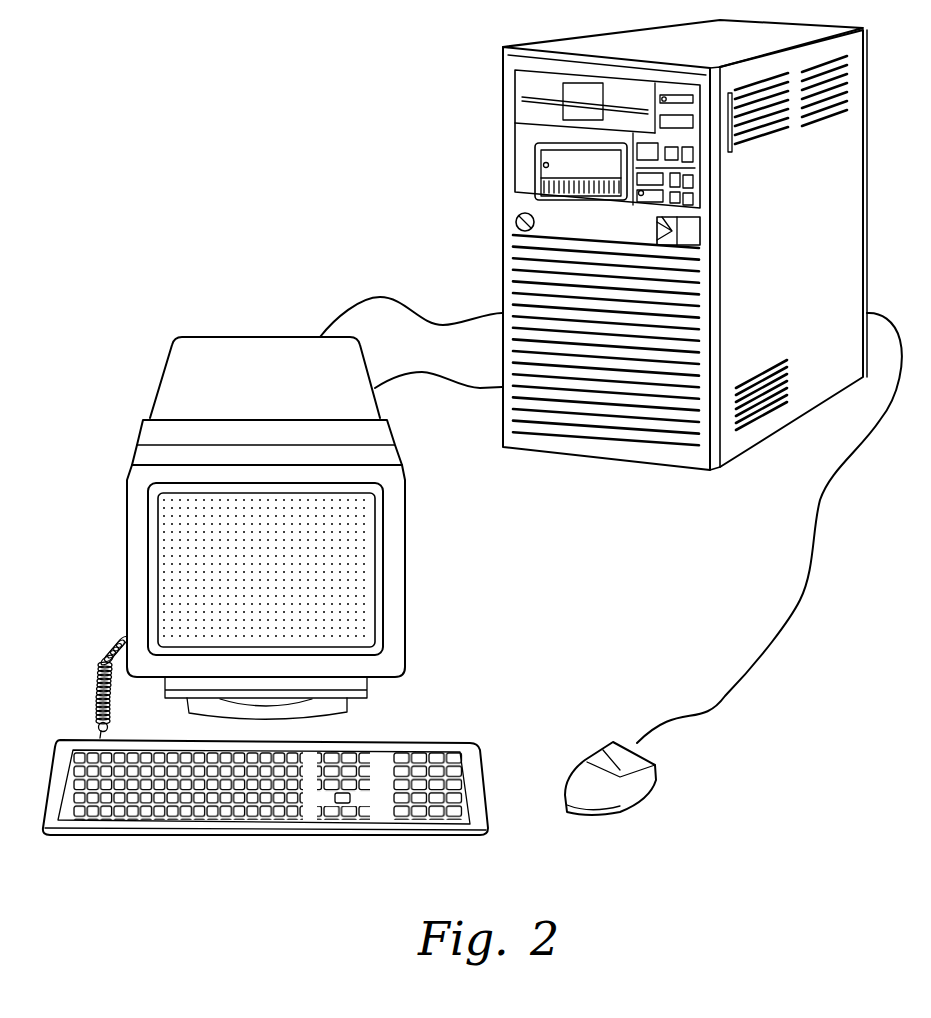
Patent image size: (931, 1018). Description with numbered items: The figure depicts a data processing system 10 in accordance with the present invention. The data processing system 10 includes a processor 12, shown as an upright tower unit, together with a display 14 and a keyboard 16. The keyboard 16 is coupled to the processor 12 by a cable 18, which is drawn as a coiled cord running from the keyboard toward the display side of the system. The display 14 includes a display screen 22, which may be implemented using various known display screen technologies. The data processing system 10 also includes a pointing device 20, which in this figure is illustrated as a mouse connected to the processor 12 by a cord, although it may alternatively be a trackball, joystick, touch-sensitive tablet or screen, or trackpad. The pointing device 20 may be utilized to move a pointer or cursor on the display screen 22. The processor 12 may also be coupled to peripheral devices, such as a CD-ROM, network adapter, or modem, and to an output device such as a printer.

The data processing system 10 is at (257, 128).
The processor 12 is at (513, 265).
The display 14 is at (257, 353).
The keyboard 16 is at (295, 833).
The cable 18 is at (93, 694).
The pointing device 20 is at (613, 808).
The display screen 22 is at (172, 575).